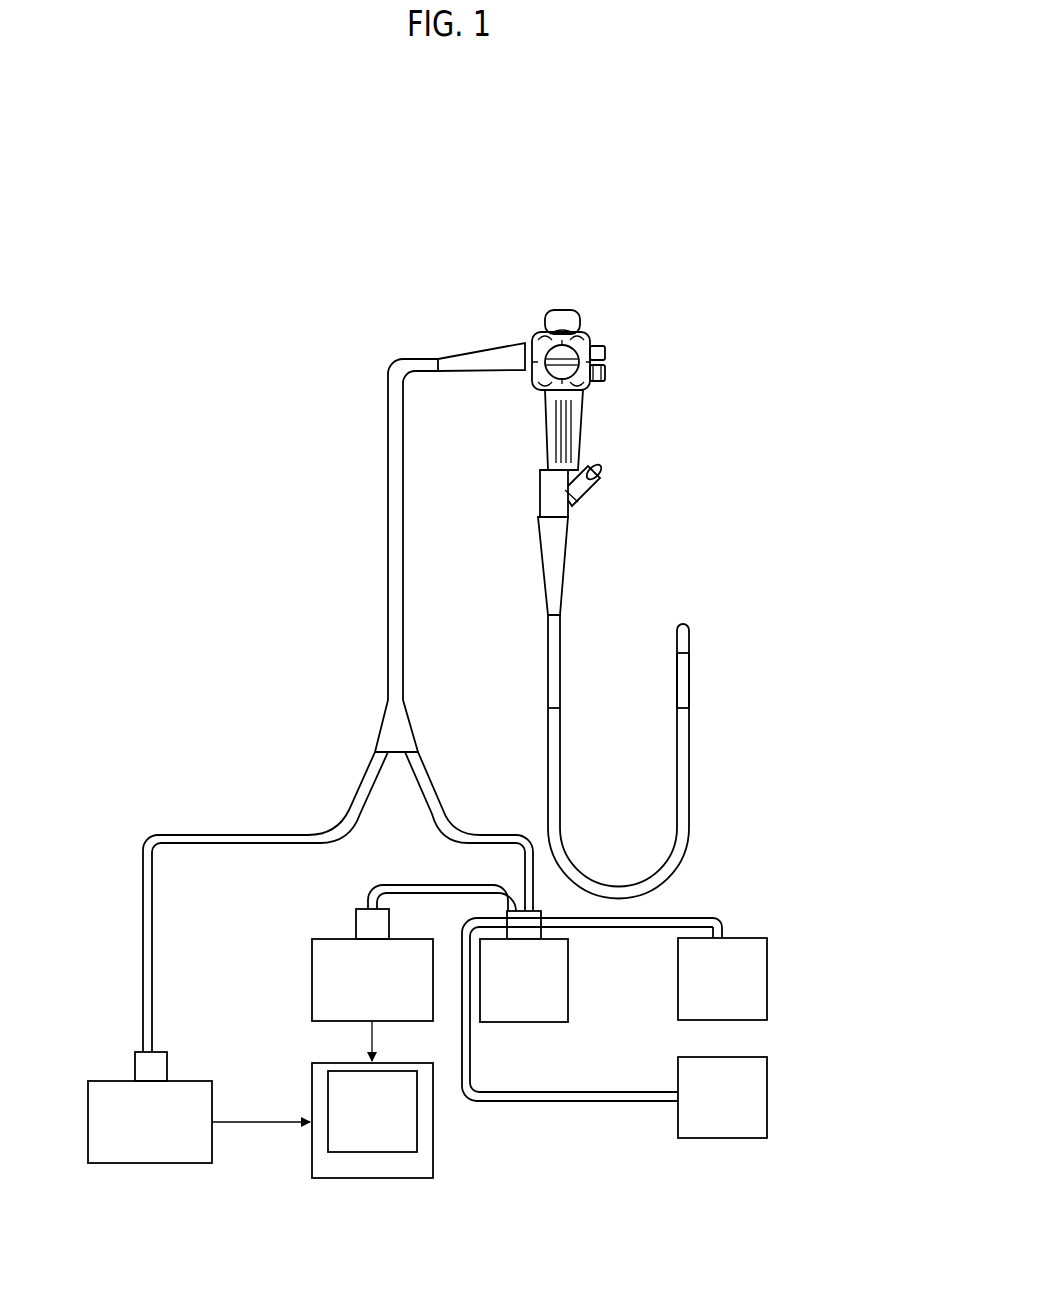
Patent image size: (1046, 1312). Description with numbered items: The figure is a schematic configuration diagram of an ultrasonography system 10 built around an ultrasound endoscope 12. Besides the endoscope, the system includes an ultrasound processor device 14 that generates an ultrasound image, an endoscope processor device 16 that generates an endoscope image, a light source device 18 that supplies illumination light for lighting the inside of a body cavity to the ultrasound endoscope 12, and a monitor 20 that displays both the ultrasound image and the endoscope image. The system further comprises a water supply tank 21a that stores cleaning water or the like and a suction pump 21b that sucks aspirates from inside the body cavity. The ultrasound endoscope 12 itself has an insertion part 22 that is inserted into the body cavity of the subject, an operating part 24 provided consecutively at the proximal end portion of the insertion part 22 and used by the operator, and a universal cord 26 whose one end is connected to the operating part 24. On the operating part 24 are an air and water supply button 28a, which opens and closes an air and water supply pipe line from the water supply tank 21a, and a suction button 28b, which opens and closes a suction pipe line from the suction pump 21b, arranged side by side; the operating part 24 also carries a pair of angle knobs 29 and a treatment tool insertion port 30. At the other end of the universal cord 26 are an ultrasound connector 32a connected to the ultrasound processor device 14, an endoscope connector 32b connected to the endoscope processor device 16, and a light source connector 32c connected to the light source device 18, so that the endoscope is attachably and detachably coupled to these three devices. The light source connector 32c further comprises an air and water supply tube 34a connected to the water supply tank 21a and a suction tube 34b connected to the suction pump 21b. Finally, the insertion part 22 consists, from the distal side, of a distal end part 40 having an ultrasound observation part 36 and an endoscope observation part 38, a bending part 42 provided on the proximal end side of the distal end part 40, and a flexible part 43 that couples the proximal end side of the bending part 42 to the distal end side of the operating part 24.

The ultrasonography system 10 is at (338, 204).
The ultrasound endoscope 12 is at (270, 548).
The ultrasound processor device 14 is at (150, 1164).
The endoscope processor device 16 is at (312, 980).
The light source device 18 is at (569, 980).
The monitor 20 is at (434, 1118).
The water supply tank 21a is at (768, 980).
The suction pump 21b is at (768, 1095).
The insertion part 22 is at (601, 858).
The operating part 24 is at (692, 367).
The universal cord 26 is at (412, 366).
The air and water supply button 28a is at (606, 372).
The suction button 28b is at (606, 356).
The angle knob 29 is at (584, 331).
The treatment tool insertion port 30 is at (592, 474).
The ultrasound connector 32a is at (168, 1062).
The endoscope connector 32b is at (355, 921).
The light source connector 32c is at (553, 908).
The air and water supply tube 34a is at (692, 916).
The suction tube 34b is at (580, 1102).
The ultrasound observation part 36 is at (686, 625).
The endoscope observation part 38 is at (677, 645).
The distal end part 40 is at (709, 631).
The bending part 42 is at (690, 676).
The flexible part 43 is at (690, 795).